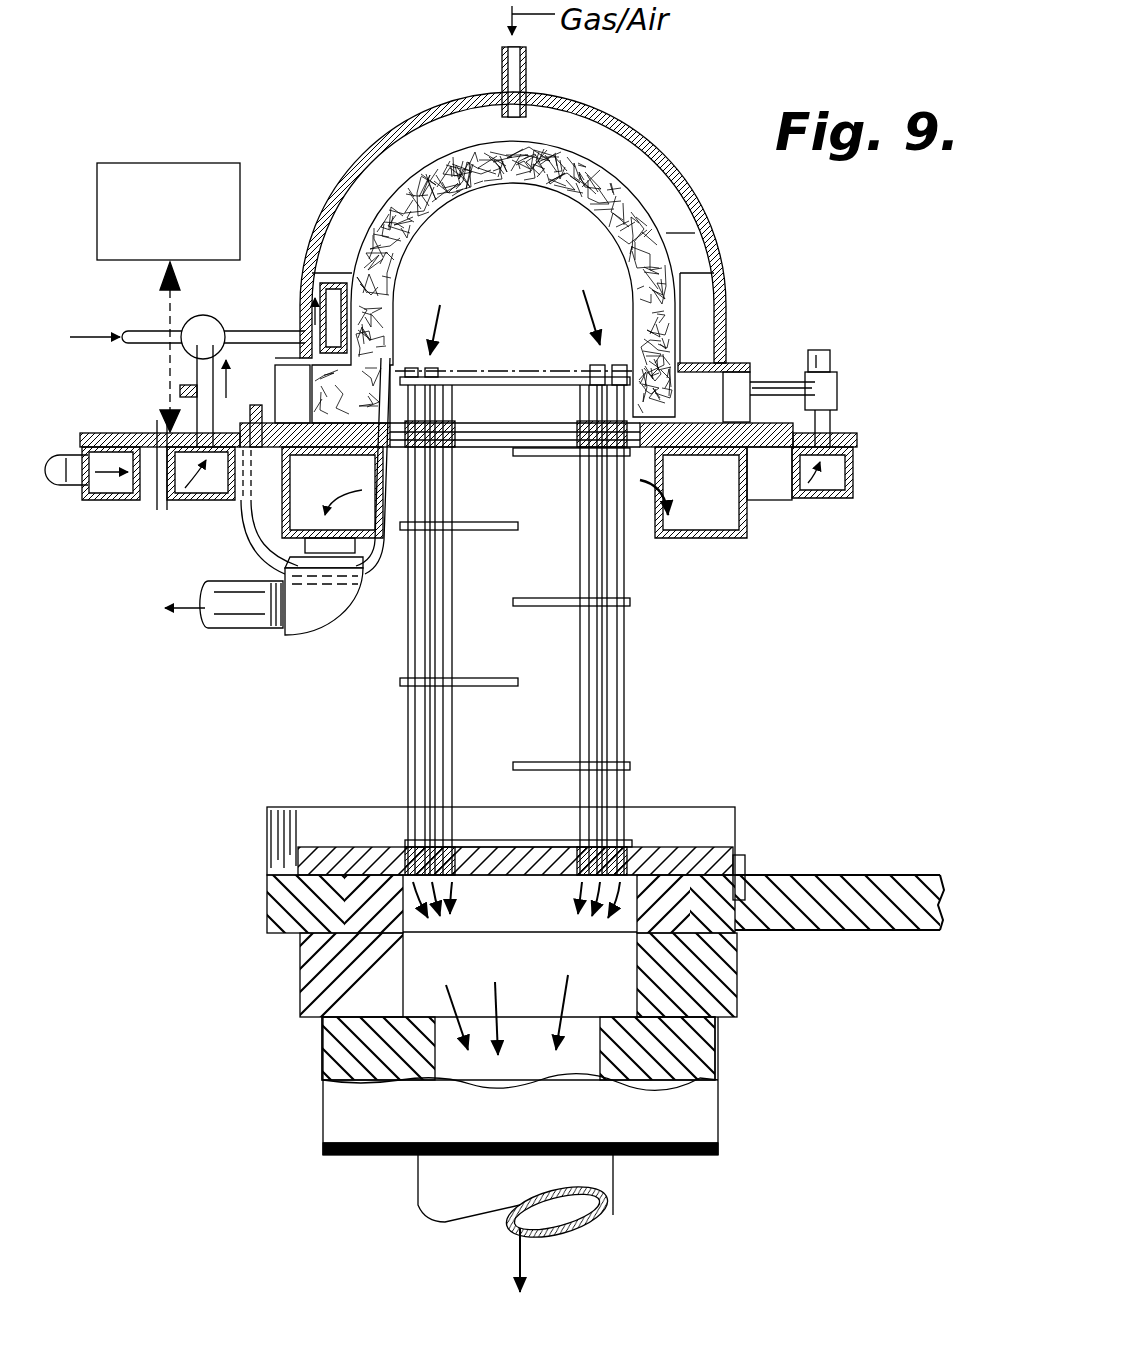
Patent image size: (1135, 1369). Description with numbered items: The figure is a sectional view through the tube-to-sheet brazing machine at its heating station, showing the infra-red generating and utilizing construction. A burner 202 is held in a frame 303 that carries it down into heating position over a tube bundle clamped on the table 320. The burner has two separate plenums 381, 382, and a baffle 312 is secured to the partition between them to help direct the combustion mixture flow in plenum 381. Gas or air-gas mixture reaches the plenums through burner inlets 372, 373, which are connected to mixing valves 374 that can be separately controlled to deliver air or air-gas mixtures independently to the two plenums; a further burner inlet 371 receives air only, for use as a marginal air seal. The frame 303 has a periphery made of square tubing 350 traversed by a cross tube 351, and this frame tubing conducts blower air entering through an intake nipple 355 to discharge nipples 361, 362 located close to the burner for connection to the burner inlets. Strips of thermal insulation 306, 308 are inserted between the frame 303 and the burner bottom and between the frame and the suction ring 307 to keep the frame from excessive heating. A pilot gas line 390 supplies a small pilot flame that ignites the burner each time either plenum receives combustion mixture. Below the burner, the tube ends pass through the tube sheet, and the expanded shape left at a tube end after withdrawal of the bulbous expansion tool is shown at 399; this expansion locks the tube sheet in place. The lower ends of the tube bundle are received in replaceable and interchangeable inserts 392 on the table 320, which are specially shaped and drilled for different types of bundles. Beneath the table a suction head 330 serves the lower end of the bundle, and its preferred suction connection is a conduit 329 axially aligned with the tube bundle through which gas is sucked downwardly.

The burner 202 is at (683, 170).
The burner inlet 373 is at (527, 72).
The plenum 382 is at (686, 221).
The plenum 381 is at (716, 353).
The baffle 312 is at (340, 320).
The tube end 399 is at (618, 372).
The frame 303 is at (858, 440).
The mixing valve 374 is at (222, 328).
The burner inlet 372 is at (268, 333).
The discharge nipple 361 is at (195, 416).
The strip of thermal insulation 306 is at (278, 400).
The intake nipple 355 is at (80, 500).
The cross tube 351 is at (216, 503).
The strip of thermal insulation 308 is at (285, 492).
The pilot gas line 390 is at (345, 598).
The suction ring 307 is at (752, 527).
The square tubing 350 is at (832, 485).
The burner inlet 371 is at (770, 384).
The discharge nipple 362 is at (822, 422).
The insert 392 is at (700, 865).
The table 320 is at (298, 915).
The suction head 330 is at (700, 1107).
The conduit 329 is at (592, 1178).